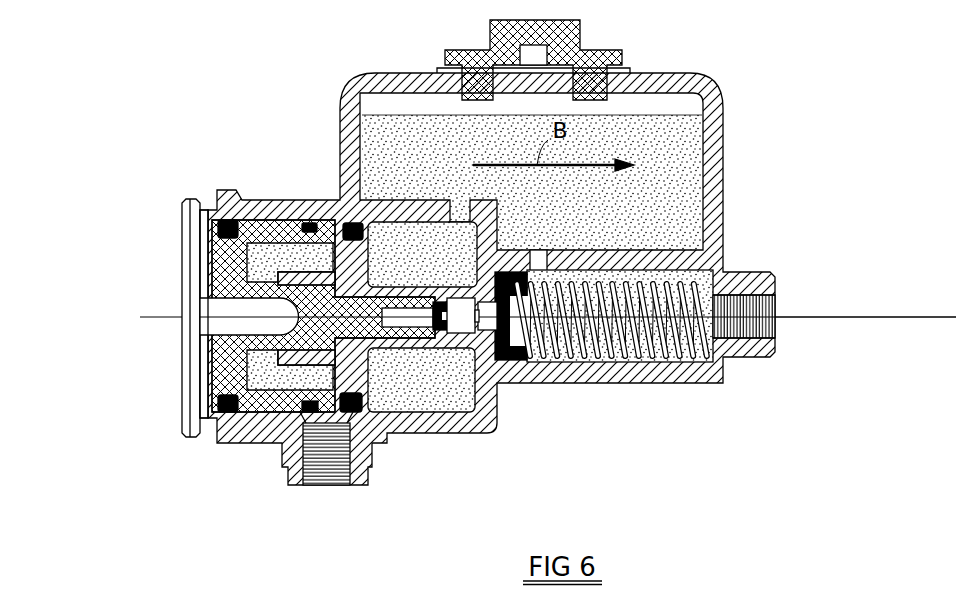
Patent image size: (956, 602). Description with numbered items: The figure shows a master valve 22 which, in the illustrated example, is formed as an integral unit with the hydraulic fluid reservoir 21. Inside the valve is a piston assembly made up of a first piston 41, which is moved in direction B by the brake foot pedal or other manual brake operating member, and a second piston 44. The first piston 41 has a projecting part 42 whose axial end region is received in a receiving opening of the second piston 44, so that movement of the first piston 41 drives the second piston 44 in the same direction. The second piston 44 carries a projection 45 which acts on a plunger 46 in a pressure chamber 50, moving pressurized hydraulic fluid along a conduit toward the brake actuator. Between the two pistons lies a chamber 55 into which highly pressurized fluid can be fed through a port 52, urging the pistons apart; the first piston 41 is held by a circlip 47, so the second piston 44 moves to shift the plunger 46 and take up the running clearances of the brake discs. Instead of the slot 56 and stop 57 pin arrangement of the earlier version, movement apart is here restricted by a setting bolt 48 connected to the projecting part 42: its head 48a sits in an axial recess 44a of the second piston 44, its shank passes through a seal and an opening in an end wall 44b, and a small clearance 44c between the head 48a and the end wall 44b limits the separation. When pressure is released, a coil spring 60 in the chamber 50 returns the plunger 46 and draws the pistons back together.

The hydraulic fluid reservoir 21 is at (697, 82).
The master valve 22 is at (590, 403).
The first piston 41 is at (212, 247).
The projecting part 42 is at (386, 414).
The second piston 44 is at (378, 345).
The axial recess 44a is at (500, 365).
The end wall 44b is at (438, 300).
The small clearance 44c is at (478, 345).
The projection 45 is at (462, 288).
The plunger 46 is at (507, 262).
The circlip 47 is at (207, 392).
The setting bolt 48 is at (402, 354).
The head of the bolt 48a is at (465, 335).
The pressure chamber 50 is at (680, 360).
The port 52 is at (327, 425).
The chamber 55 is at (263, 363).
The slot 56 is at (305, 265).
The stop 57 is at (305, 414).
The coil spring 60 is at (643, 358).